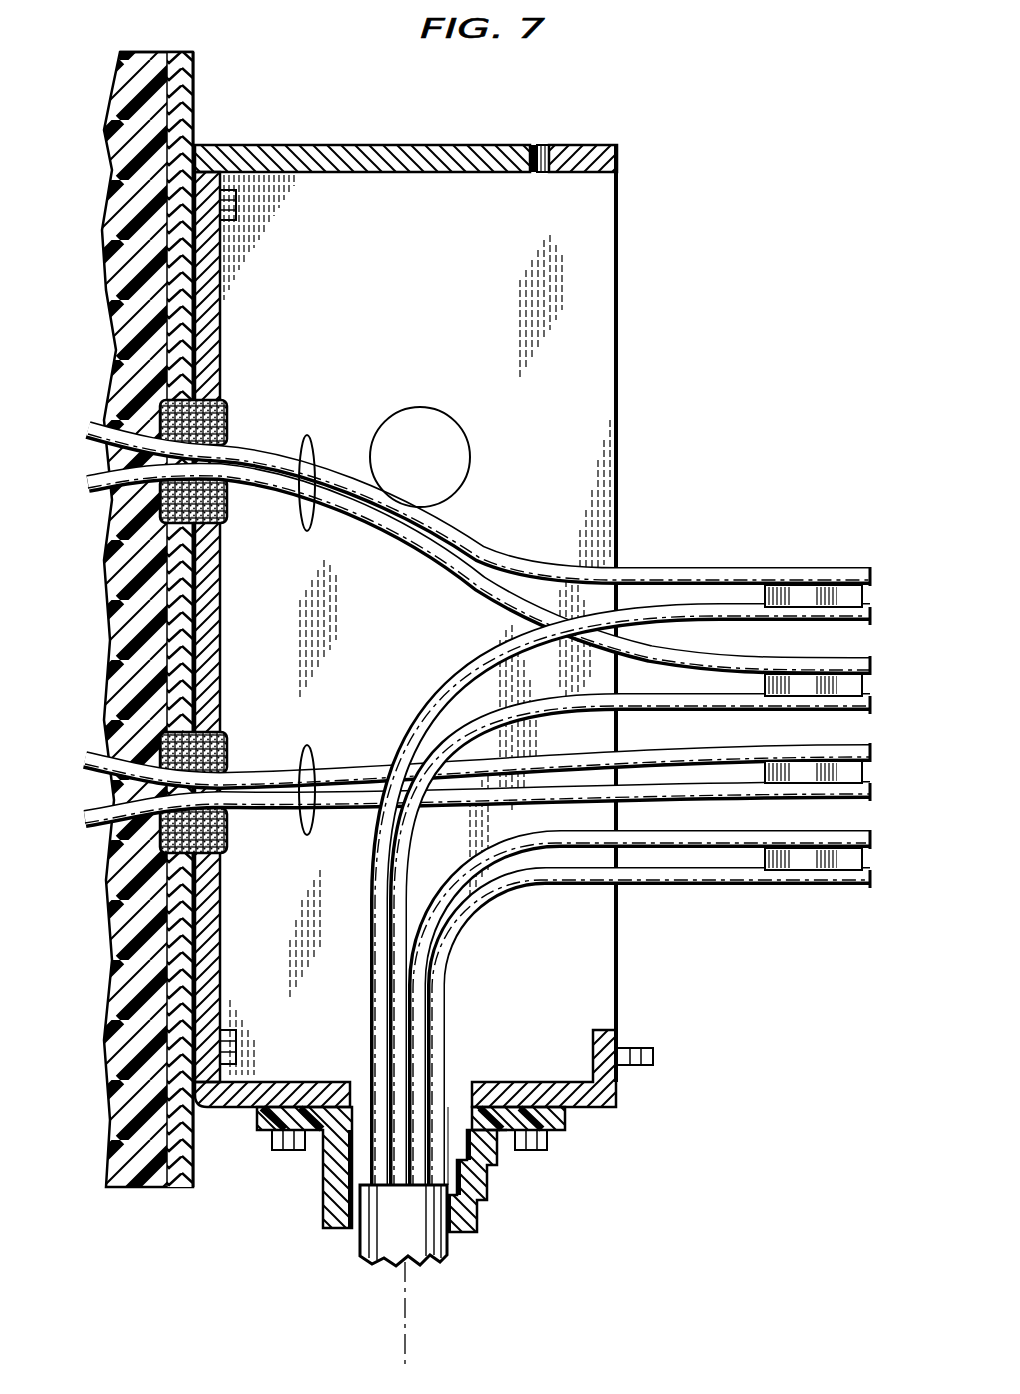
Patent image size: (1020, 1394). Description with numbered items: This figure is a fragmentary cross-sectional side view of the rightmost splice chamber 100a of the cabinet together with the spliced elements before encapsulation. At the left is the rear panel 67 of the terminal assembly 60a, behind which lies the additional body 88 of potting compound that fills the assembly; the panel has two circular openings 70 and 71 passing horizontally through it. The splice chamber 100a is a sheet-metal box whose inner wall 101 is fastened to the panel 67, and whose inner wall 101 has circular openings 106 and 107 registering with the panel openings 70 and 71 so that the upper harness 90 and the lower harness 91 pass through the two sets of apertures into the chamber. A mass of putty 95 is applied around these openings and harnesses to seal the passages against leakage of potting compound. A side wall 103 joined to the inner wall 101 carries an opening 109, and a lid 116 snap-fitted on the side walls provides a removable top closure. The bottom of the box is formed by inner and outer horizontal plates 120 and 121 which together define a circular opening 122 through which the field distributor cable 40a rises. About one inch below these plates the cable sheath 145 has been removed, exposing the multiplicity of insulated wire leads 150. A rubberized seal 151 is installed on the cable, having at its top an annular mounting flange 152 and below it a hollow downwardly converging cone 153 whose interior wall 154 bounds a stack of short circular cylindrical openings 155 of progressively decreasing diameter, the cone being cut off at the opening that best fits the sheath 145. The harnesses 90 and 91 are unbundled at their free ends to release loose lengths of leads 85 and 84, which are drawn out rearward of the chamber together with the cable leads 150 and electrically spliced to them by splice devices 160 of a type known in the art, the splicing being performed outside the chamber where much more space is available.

The rear panel 67 is at (158, 619).
The additional body of potting compound 88 is at (132, 150).
The terminal assembly 60a is at (85, 258).
The circular opening 70 is at (160, 402).
The circular opening 71 is at (160, 850).
The inner wall 101 is at (222, 276).
The side wall 103 is at (619, 285).
The lid 116 is at (395, 147).
The splice chamber 100a is at (450, 329).
The circular opening 106 is at (228, 405).
The circular opening 107 is at (228, 838).
The putty 95 is at (228, 498).
The upper harness 90 is at (305, 436).
The lower harness 91 is at (305, 746).
The opening 109 is at (472, 462).
The leads 85 is at (555, 543).
The leads 84 is at (366, 772).
The insulated wire leads 150 is at (452, 668).
The splice devices 160 is at (866, 596).
The inner horizontal plate 120 is at (226, 1110).
The outer horizontal plate 121 is at (600, 1110).
The circular opening 122 is at (358, 1112).
The rubberized seal 151 is at (322, 1180).
The annular mounting flange 152 is at (570, 1135).
The hollow downwardly converging cone 153 is at (490, 1190).
The interior wall 154 is at (490, 1042).
The circular cylindrical openings 155 is at (452, 1112).
The cable sheath 145 is at (388, 1262).
The field distributor cable 40a is at (406, 1322).